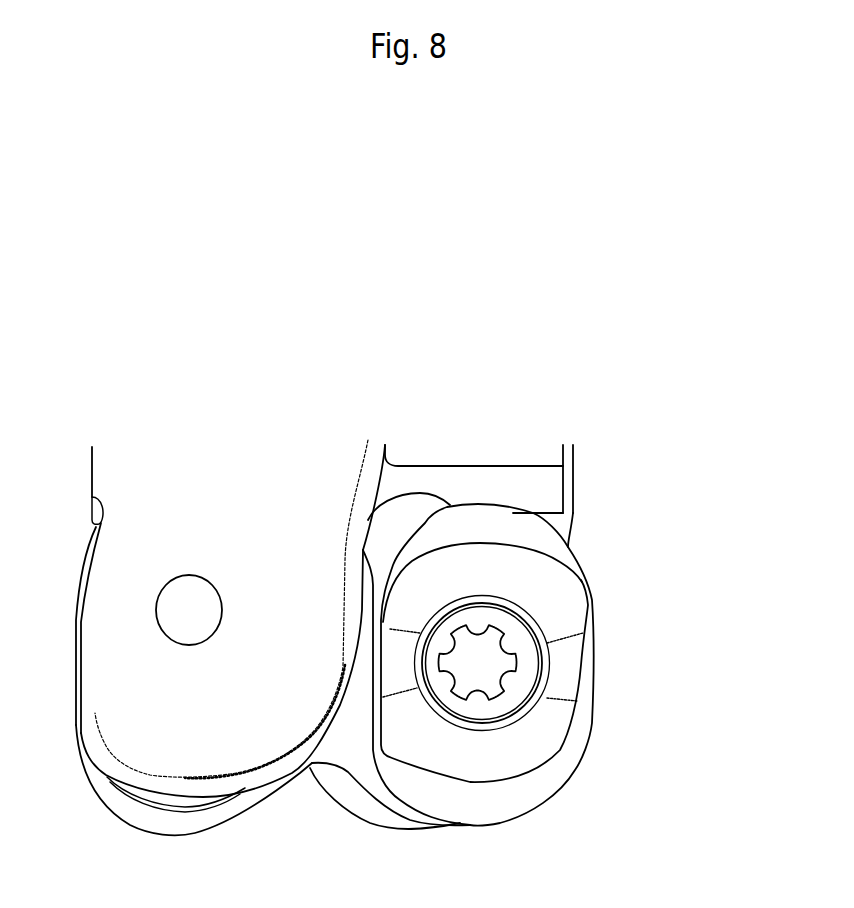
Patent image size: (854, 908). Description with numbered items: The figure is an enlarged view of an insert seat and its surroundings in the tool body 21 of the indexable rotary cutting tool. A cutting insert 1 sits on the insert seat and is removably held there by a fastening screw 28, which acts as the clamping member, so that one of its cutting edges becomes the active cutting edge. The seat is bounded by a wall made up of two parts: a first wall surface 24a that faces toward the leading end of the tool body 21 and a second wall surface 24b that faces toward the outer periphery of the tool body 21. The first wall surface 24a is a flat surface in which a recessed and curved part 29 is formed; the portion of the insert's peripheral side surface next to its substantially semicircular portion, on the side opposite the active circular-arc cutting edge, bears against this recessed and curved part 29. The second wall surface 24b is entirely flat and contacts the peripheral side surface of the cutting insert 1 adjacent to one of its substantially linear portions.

The cutting insert 1 is at (487, 760).
The tool body 21 is at (157, 535).
The first wall surface 24a is at (550, 513).
The second wall surface 24b is at (366, 690).
The fastening screw 28 is at (535, 665).
The recessed and curved part 29 is at (487, 507).